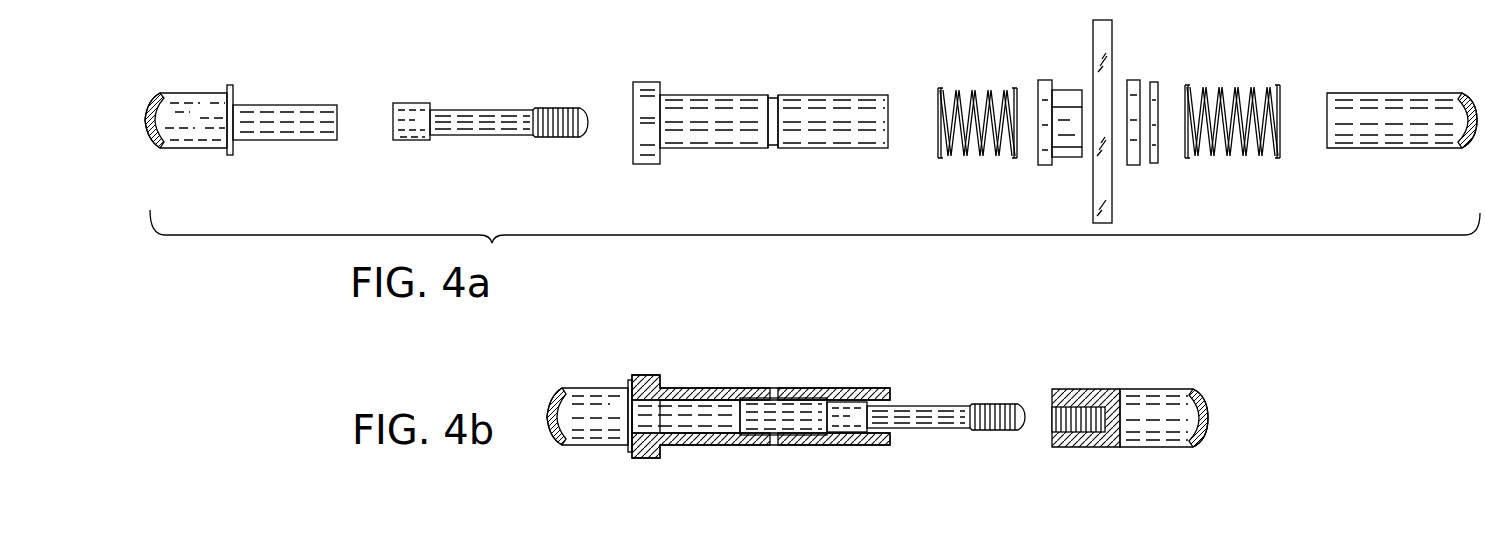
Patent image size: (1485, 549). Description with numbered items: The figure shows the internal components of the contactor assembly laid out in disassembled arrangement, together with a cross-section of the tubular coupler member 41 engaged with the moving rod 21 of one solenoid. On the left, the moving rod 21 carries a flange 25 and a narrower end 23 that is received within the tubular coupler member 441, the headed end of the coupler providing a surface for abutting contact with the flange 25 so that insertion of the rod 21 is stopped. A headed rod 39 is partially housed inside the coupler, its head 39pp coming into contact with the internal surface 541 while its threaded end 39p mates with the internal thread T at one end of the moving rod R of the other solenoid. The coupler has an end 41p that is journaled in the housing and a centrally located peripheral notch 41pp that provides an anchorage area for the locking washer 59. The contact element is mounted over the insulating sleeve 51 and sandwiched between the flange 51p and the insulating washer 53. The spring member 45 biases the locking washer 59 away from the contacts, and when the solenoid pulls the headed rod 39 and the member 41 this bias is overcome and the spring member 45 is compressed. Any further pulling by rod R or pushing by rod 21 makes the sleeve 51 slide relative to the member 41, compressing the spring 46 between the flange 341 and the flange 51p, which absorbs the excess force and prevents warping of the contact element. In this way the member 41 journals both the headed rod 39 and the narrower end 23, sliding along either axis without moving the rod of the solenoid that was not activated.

In FIG. 4a, the moving rod 21 is at (185, 154).
In FIG. 4b, the moving rod 21 is at (595, 422).
In FIG. 4a, the narrower end 23 is at (300, 128).
In FIG. 4b, the narrower end 23 is at (680, 417).
In FIG. 4a, the flange 25 is at (230, 157).
In FIG. 4b, the flange 25 is at (630, 385).
In FIG. 4a, the headed rod 39 is at (490, 130).
In FIG. 4b, the headed rod 39 is at (926, 448).
In FIG. 4a, the threaded end 39p is at (562, 108).
In FIG. 4b, the threaded end 39p is at (1007, 432).
In FIG. 4a, the head 39pp is at (405, 113).
In FIG. 4b, the head 39pp is at (845, 415).
In FIG. 4a, the tubular coupler member 41 is at (728, 119).
In FIG. 4b, the tubular coupler member 41 is at (761, 396).
In FIG. 4a, the end of tubular coupler member 41p is at (838, 124).
In FIG. 4a, the peripheral notch 41pp is at (773, 140).
In FIG. 4a, the tubular coupler member 441 is at (633, 95).
In FIG. 4a, the flange 341 is at (640, 150).
In FIG. 4b, the internal surface 541 is at (875, 390).
In FIG. 4a, the spring member 45 is at (1258, 156).
In FIG. 4a, the spring 46 is at (960, 156).
In FIG. 4a, the insulating sleeve 51 is at (1066, 100).
In FIG. 4a, the flange 51p is at (1046, 137).
In FIG. 4a, the insulating washer 53 is at (1133, 82).
In FIG. 4a, the locking washer 59 is at (1155, 163).
In FIG. 4a, the moving rod R is at (1390, 120).
In FIG. 4b, the moving rod R is at (1155, 420).
In FIG. 4b, the internal thread T is at (1058, 420).